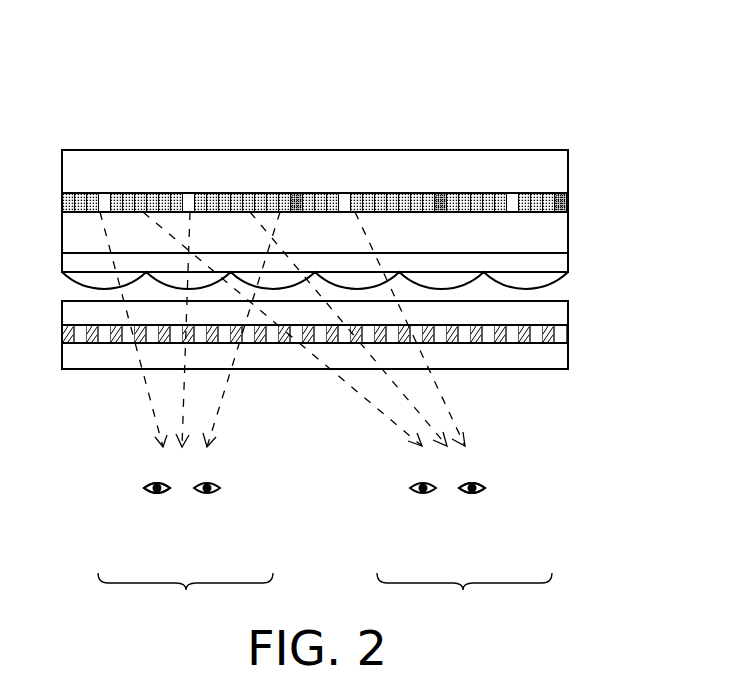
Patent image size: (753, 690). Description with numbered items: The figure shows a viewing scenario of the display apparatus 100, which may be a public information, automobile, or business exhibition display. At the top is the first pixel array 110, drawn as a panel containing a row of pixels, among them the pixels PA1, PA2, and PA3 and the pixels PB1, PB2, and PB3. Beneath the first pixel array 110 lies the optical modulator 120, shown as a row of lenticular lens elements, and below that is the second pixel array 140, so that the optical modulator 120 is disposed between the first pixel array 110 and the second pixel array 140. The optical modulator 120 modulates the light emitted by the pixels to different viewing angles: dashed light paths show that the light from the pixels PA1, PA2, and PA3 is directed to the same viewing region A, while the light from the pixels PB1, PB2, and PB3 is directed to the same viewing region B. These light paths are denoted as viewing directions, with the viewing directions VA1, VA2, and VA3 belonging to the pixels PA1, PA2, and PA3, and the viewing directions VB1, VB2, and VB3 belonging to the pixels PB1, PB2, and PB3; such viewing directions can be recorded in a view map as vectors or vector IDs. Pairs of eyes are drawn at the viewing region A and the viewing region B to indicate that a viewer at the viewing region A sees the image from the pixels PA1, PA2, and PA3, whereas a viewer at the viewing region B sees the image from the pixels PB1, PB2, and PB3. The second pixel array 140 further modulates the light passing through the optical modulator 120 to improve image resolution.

The display apparatus 100 is at (579, 98).
The first pixel array 110 is at (569, 171).
The optical modulator 120 is at (556, 281).
The second pixel array 140 is at (569, 334).
The pixel PA1 is at (100, 193).
The pixel PA2 is at (190, 193).
The pixel PA3 is at (280, 193).
The pixel PB1 is at (143, 193).
The pixel PB2 is at (250, 193).
The pixel PB3 is at (355, 193).
The viewing direction VA1 is at (158, 423).
The viewing direction VA2 is at (185, 414).
The viewing direction VA3 is at (222, 408).
The viewing direction VB1 is at (369, 405).
The viewing direction VB2 is at (414, 410).
The viewing direction VB3 is at (452, 417).
The viewing region A is at (185, 601).
The viewing region B is at (464, 601).